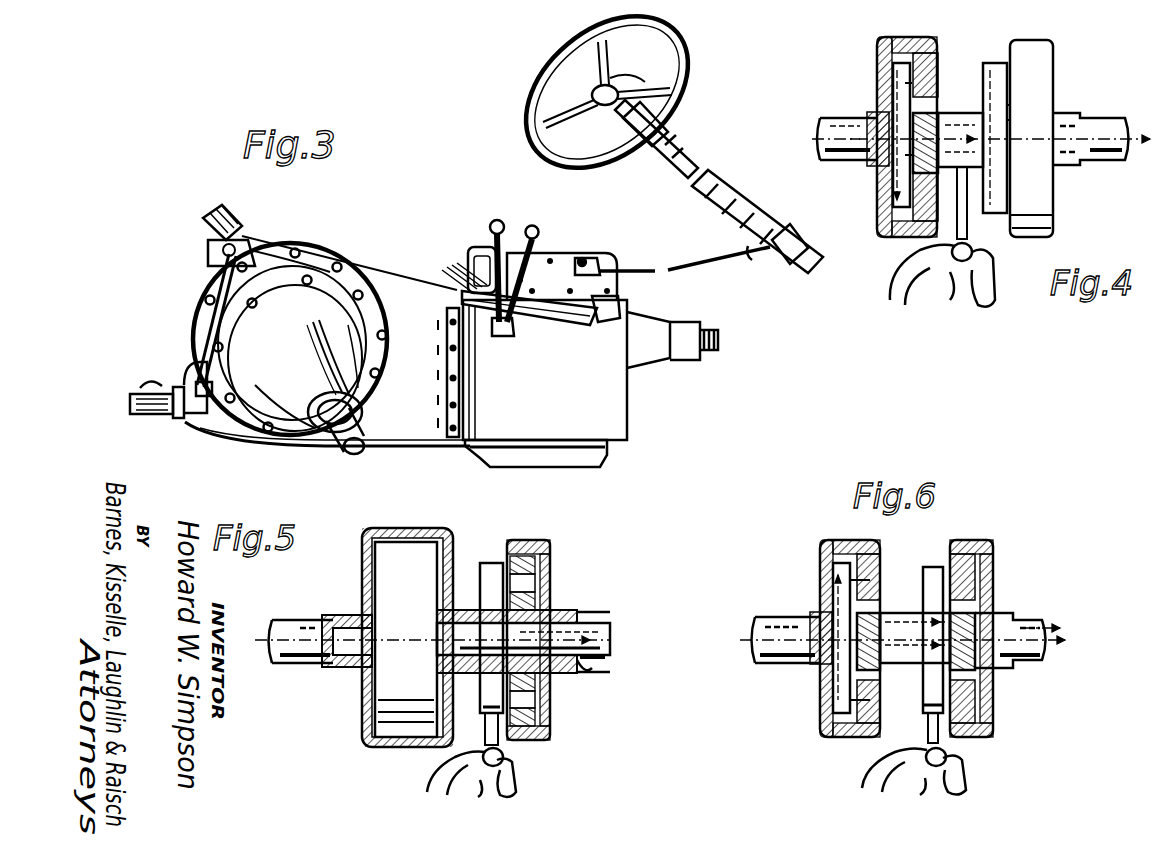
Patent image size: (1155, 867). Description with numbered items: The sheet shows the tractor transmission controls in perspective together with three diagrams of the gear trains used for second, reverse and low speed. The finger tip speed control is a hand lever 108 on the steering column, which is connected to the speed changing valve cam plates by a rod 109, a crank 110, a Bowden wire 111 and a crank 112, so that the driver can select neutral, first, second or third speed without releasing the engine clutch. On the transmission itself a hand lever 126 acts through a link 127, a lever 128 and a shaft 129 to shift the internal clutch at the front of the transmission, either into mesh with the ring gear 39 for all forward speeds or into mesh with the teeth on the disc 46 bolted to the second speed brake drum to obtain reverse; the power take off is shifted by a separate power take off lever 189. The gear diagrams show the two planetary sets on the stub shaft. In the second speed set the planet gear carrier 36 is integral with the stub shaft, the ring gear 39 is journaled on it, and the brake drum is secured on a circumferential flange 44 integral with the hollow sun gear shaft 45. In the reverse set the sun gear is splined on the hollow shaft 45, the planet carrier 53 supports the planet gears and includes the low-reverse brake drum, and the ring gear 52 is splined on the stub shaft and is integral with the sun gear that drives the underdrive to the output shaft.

In FIG. 4, the planet gear carrier 36 is at (928, 70).
In FIG. 6, the planet gear carrier 36 is at (872, 570).
In FIG. 4, the ring gear 39 is at (877, 212).
In FIG. 5, the ring gear 39 is at (440, 535).
In FIG. 6, the ring gear 39 is at (822, 540).
In FIG. 5, the circumferential flange 44 is at (447, 610).
In FIG. 4, the hollow sun gear shaft 45 is at (955, 113).
In FIG. 5, the hollow sun gear shaft 45 is at (470, 670).
In FIG. 6, the hollow sun gear shaft 45 is at (903, 612).
In FIG. 5, the disc 46 is at (390, 540).
In FIG. 4, the ring gear 52 is at (1045, 60).
In FIG. 5, the ring gear 52 is at (548, 542).
In FIG. 6, the ring gear 52 is at (993, 556).
In FIG. 4, the planet carrier 53 is at (983, 58).
In FIG. 5, the planet carrier 53 is at (492, 562).
In FIG. 6, the planet carrier 53 is at (934, 562).
In FIG. 3, the hand lever 108 is at (625, 118).
In FIG. 3, the rod 109 is at (697, 167).
In FIG. 3, the crank 110 is at (772, 233).
In FIG. 3, the Bowden wire 111 is at (655, 270).
In FIG. 3, the crank 112 is at (598, 258).
In FIG. 3, the hand lever 126 is at (490, 228).
In FIG. 3, the link 127 is at (560, 318).
In FIG. 3, the lever 128 is at (612, 296).
In FIG. 3, the shaft 129 is at (612, 302).
In FIG. 3, the power take off lever 189 is at (222, 254).